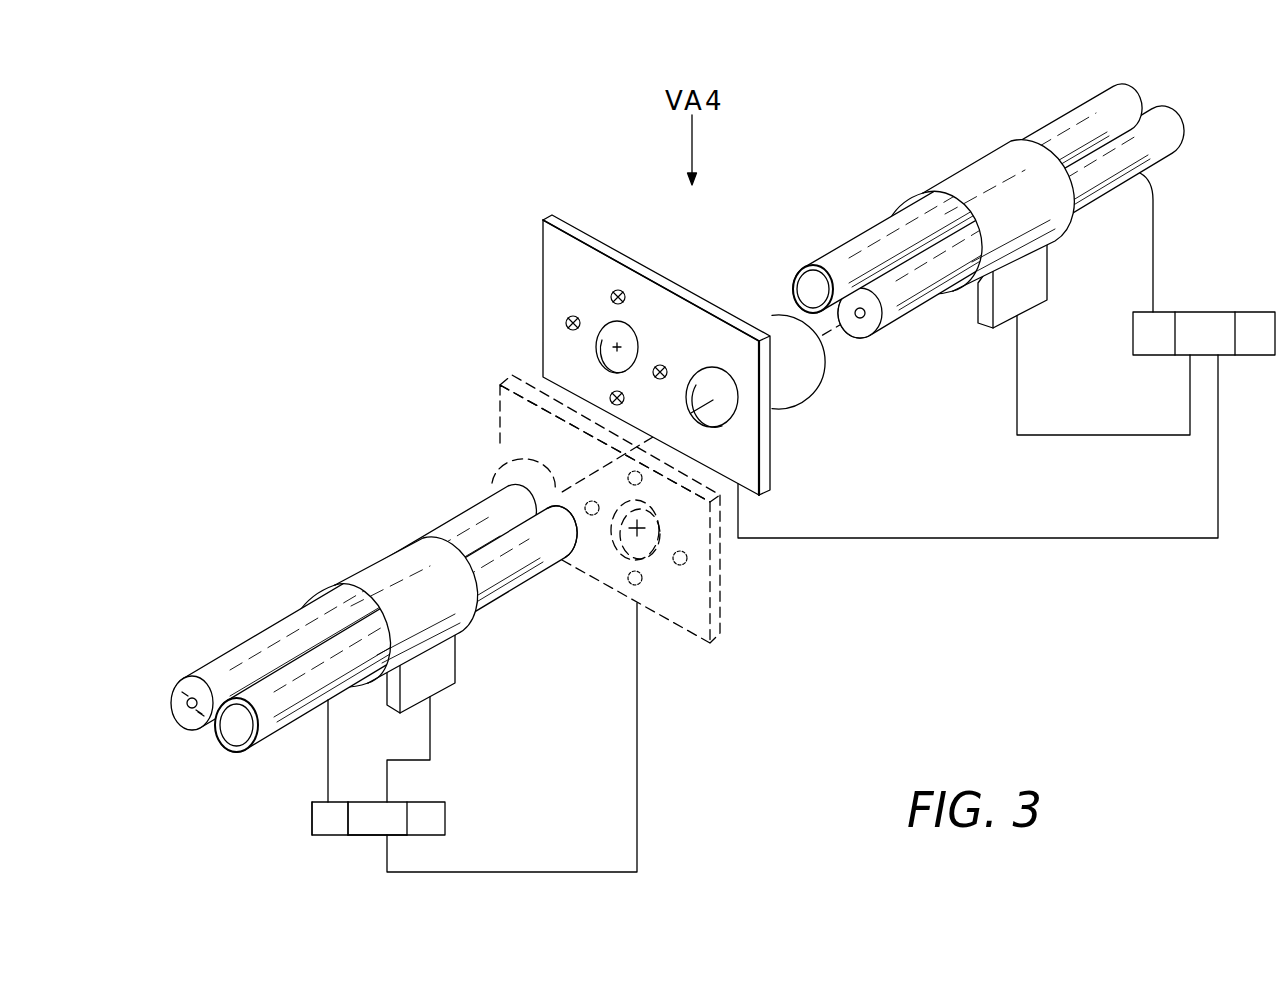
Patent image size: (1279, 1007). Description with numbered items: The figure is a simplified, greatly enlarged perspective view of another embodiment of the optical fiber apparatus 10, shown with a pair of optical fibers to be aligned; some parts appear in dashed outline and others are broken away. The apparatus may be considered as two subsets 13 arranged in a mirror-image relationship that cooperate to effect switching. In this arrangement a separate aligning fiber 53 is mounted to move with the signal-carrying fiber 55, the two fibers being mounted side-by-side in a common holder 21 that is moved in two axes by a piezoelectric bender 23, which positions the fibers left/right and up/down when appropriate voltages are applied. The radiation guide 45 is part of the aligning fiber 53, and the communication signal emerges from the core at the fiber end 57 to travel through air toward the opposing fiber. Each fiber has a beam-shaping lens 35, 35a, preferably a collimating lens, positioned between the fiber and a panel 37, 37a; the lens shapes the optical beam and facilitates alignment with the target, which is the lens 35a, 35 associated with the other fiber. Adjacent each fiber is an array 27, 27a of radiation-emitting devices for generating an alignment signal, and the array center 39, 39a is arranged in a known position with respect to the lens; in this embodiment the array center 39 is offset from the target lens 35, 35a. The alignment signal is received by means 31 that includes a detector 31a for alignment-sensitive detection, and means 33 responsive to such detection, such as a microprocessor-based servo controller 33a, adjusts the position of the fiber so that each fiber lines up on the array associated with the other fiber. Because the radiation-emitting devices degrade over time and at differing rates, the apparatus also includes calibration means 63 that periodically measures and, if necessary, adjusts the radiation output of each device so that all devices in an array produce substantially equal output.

The optical fiber apparatus 10 is at (873, 645).
The subset 13 is at (275, 383).
The holder 21 is at (985, 167).
The piezoelectric bender 23 is at (1022, 293).
The array of radiation-emitting devices 27 is at (612, 334).
The array of radiation-emitting devices 27a is at (613, 536).
The means associated with fiber for detection 31 is at (255, 823).
The detector 31a is at (312, 835).
The means responsive to detection 33 is at (352, 850).
The microprocessor-based servo controller 33a is at (368, 836).
The beam-shaping lens 35 is at (765, 313).
The beam-shaping lens 35a is at (498, 457).
The panel 37 is at (587, 243).
The panel 37a is at (713, 613).
The array center 39 is at (612, 347).
The array center 39a is at (641, 545).
The radiation guide 45 is at (797, 273).
The aligning fiber 53 is at (640, 443).
The signal-carrying fiber 55 is at (1163, 136).
The fiber end 57 is at (814, 264).
The calibration means 63 is at (718, 578).